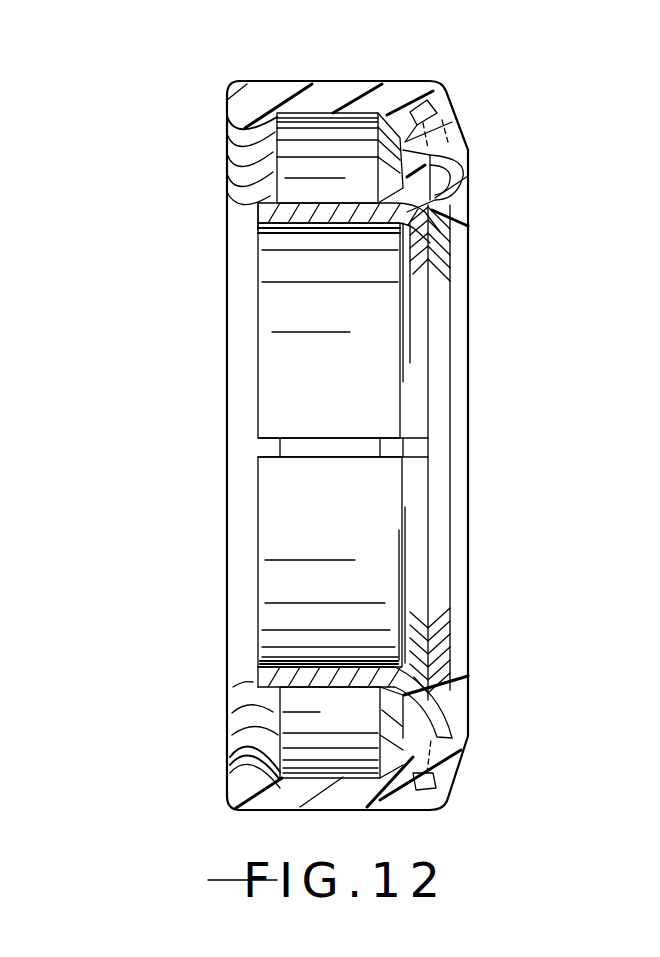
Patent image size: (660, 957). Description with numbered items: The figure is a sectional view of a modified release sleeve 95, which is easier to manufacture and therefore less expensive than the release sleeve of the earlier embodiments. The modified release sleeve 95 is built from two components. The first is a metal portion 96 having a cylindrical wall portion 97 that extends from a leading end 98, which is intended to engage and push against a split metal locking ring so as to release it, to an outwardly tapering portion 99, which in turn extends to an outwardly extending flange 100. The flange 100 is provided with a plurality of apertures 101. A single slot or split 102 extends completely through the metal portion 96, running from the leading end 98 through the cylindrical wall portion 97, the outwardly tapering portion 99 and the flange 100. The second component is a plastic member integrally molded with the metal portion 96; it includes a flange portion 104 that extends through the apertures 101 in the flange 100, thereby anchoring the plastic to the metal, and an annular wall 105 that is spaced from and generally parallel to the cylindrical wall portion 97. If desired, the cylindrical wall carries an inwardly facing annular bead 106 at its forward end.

The modified release sleeve 95 is at (472, 132).
The metal portion 96 is at (262, 207).
The cylindrical wall portion 97 is at (277, 312).
The leading end 98 is at (258, 587).
The outwardly tapering portion 99 is at (458, 204).
The outwardly extending flange 100 is at (452, 738).
The apertures 101 is at (448, 752).
The slot or split 102 is at (307, 458).
The flange portion 104 is at (455, 143).
The annular wall 105 is at (333, 113).
The inwardly facing annular bead 106 is at (251, 756).